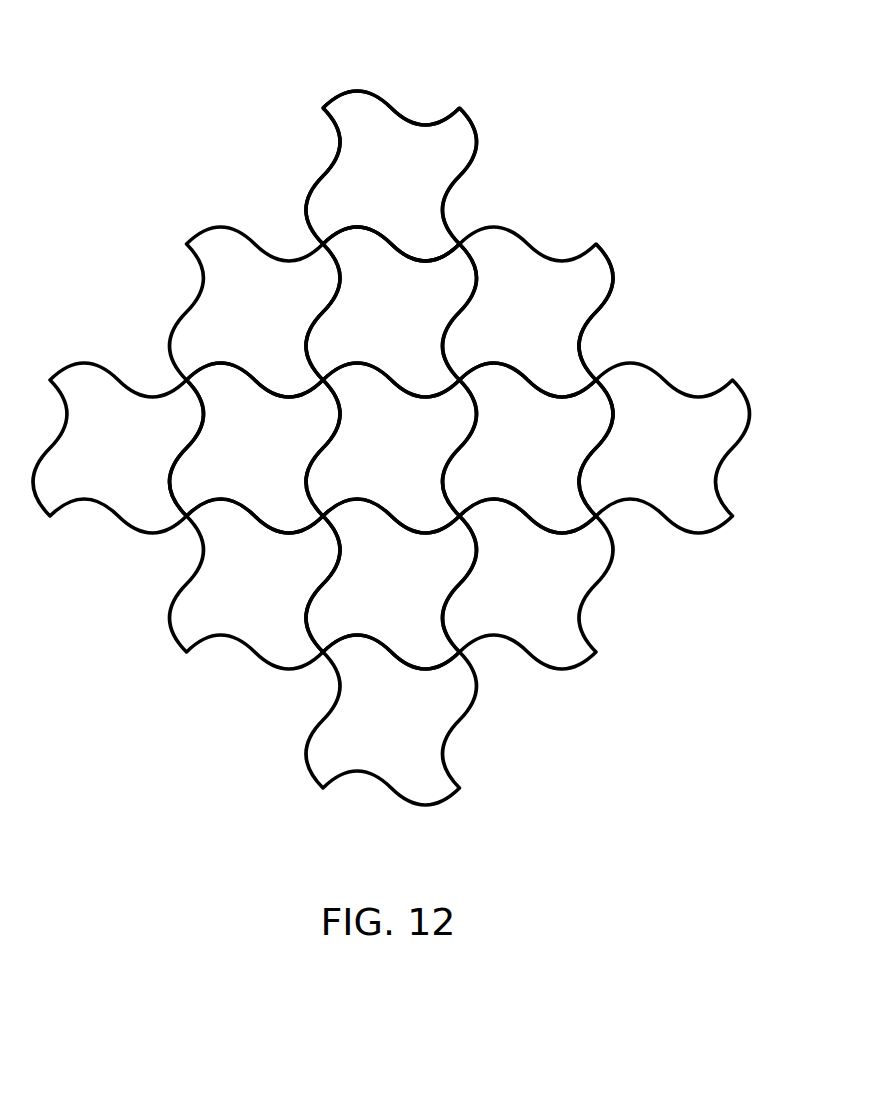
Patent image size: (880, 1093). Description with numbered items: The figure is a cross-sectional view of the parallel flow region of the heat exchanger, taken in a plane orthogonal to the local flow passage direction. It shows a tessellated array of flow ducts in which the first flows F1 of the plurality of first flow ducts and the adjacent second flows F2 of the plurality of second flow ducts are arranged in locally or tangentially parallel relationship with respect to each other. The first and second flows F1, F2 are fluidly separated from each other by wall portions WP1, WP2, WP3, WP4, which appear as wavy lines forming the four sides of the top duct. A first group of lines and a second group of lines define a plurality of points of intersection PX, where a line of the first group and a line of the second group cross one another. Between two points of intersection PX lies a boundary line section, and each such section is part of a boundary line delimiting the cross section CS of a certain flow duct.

The point of intersection PX is at (391, 448).
The first flow F1 is at (373, 193).
The second flow F2 is at (373, 329).
The wall portion WP1 is at (389, 100).
The wall portion WP2 is at (337, 157).
The wall portion WP3 is at (410, 253).
The wall portion WP4 is at (443, 210).
The cross section CS is at (573, 298).